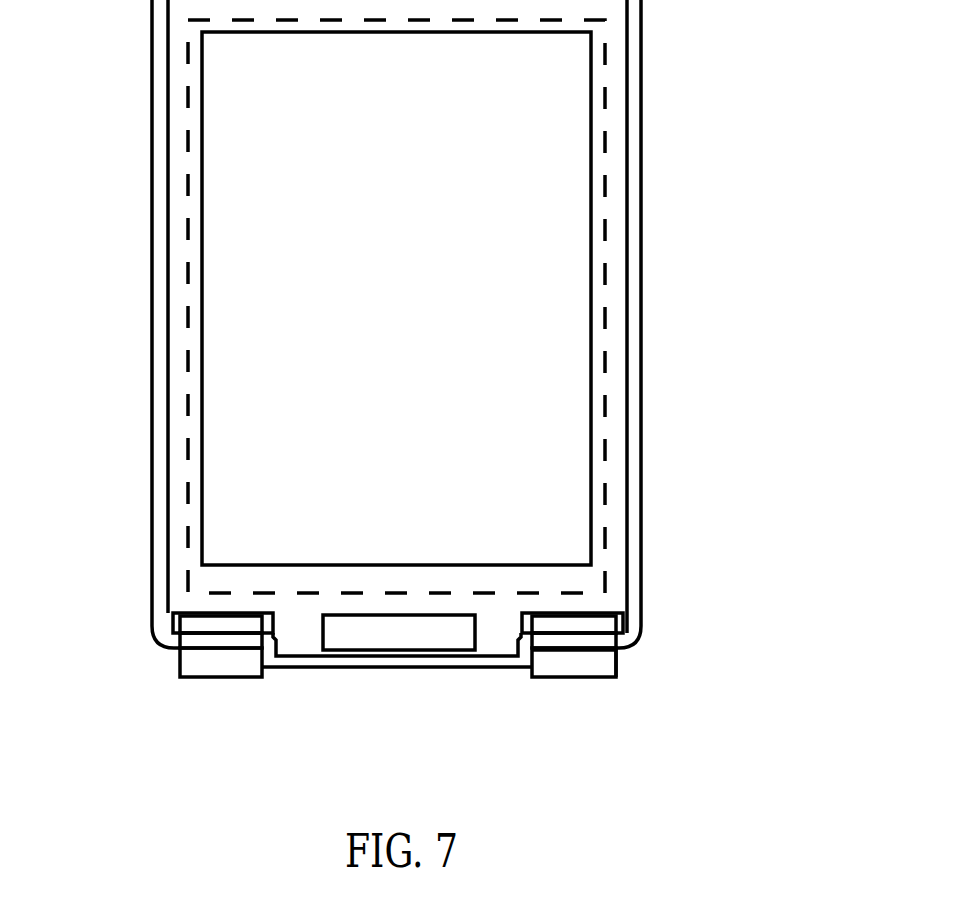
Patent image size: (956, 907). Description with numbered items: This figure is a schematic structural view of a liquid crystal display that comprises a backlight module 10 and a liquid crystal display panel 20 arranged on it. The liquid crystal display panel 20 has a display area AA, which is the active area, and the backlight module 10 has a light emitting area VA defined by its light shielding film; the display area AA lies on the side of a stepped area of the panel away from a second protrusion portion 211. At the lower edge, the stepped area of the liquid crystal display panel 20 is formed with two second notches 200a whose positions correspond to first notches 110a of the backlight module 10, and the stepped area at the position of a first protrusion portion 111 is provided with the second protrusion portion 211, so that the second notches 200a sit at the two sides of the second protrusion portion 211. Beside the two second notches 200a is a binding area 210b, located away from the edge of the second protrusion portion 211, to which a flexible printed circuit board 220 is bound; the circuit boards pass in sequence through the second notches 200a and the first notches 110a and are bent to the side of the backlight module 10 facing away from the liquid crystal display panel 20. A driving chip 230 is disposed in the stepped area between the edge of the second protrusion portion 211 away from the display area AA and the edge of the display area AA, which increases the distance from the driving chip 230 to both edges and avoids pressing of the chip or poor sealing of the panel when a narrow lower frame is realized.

The backlight module 10 is at (644, 113).
The liquid crystal display panel 20 is at (628, 165).
The display area AA is at (590, 210).
The light emitting area VA is at (605, 304).
The first notches 110a is at (189, 691).
The first protrusion portion 111 is at (340, 668).
The second notches 200a is at (228, 700).
The binding area 210b is at (208, 622).
The second protrusion portion 211 is at (422, 657).
The flexible printed circuit board 220 is at (617, 660).
The driving chip 230 is at (372, 636).